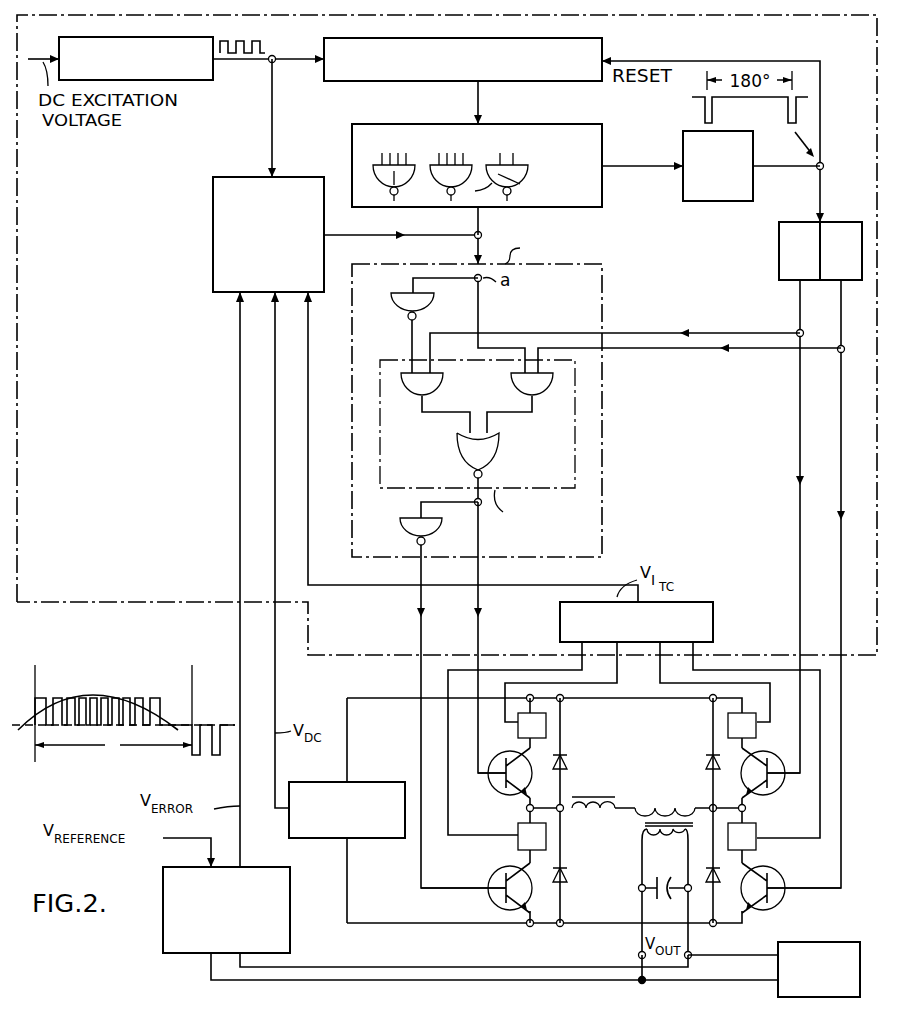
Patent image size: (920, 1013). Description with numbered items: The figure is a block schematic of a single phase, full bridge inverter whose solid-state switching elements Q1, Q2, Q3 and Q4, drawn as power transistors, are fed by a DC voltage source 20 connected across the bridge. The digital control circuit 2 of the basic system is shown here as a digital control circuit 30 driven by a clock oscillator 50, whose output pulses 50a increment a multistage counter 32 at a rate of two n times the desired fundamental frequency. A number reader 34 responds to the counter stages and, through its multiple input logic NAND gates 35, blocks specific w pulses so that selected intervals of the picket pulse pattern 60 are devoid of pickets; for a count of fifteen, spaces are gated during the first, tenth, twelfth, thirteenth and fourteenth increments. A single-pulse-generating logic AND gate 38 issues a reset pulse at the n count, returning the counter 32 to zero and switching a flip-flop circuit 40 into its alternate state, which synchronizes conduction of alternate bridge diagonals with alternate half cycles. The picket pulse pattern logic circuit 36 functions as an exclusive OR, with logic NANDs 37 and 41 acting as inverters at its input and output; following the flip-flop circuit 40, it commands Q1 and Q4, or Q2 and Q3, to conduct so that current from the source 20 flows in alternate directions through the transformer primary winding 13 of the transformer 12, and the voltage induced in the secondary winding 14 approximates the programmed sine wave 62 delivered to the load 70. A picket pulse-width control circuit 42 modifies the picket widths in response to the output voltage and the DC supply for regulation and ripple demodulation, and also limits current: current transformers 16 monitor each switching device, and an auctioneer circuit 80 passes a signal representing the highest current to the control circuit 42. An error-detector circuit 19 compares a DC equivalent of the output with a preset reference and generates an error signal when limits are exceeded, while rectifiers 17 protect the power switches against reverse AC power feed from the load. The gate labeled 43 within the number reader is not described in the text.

The digital control circuit 2 is at (748, 16).
The clock oscillator 50 is at (127, 36).
The clock oscillator output pulses 50a is at (262, 40).
The multistage counter 32 is at (538, 36).
The digital control circuit 30 is at (434, 102).
The number reader 34 is at (552, 124).
The multiple input logic NAND gates 35 is at (432, 178).
The number reader gate 43 is at (510, 184).
The transformer secondary winding 14 is at (512, 170).
The picket pulse-width control circuit 42 is at (213, 240).
The logic AND gate 38 is at (683, 188).
The flip-flop circuit 40 is at (779, 250).
The picket pulse pattern logic circuit 36 is at (602, 292).
The logic NAND 37 is at (400, 305).
The logic NAND 41 is at (400, 527).
The auctioneer circuit 80 is at (698, 602).
The DC voltage source 20 is at (326, 782).
The current transformers 16 is at (518, 733).
The rectifiers 17 is at (567, 767).
The switching element Q1 is at (494, 790).
The switching element Q2 is at (492, 876).
The switching element Q3 is at (776, 790).
The switching element Q4 is at (782, 898).
The transformer 12 is at (603, 819).
The transformer primary winding 13 is at (664, 804).
The load 70 is at (846, 942).
The error-detector circuit 19 is at (290, 904).
The picket pulse pattern 60 is at (123, 710).
The programmed waveform voltage 62 is at (148, 704).